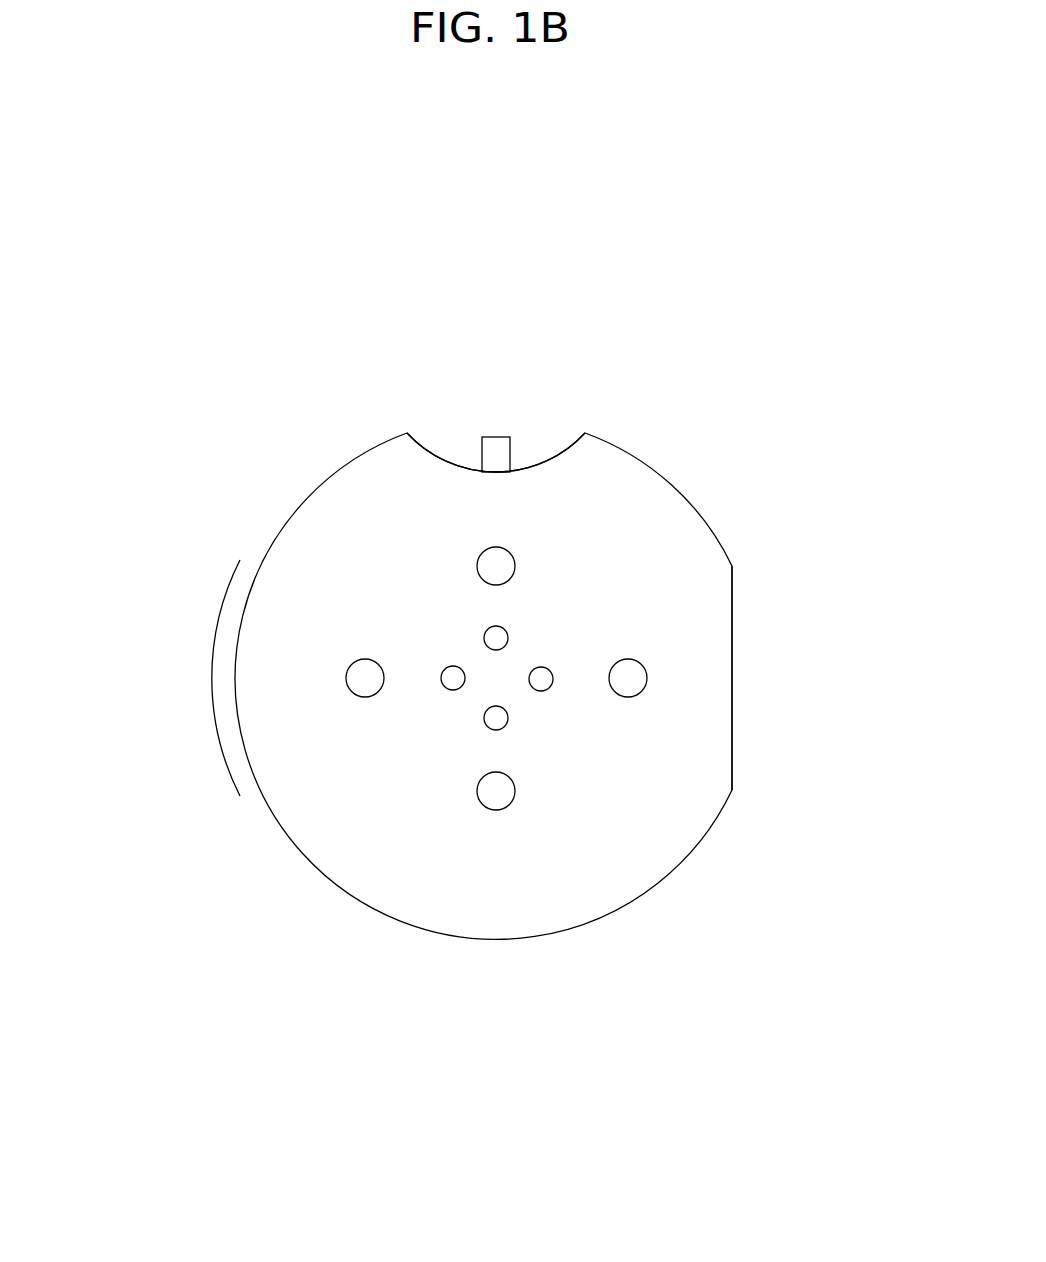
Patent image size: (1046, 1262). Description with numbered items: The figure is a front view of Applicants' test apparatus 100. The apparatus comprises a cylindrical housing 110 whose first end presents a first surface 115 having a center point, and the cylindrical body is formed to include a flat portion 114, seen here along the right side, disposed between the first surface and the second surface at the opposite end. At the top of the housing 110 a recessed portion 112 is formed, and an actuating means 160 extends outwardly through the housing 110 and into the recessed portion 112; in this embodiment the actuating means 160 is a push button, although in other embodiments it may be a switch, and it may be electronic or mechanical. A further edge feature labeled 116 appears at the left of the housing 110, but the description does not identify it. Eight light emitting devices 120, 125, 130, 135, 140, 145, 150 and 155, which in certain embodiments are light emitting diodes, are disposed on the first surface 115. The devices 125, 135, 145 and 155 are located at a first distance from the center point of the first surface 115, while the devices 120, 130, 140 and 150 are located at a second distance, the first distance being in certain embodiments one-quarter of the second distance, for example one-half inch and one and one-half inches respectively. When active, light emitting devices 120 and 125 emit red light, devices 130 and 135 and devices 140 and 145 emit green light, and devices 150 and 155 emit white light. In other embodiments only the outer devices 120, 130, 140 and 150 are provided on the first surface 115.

The test apparatus 100 is at (499, 698).
The cylindrical housing 110 is at (678, 490).
The recessed portion 112 is at (442, 459).
The flat portion 114 is at (733, 673).
The first surface 115 is at (514, 687).
The circumferential edge 116 is at (233, 678).
The light emitting device 120 is at (496, 566).
The light emitting device 125 is at (496, 638).
The light emitting device 130 is at (365, 678).
The light emitting device 135 is at (453, 678).
The light emitting device 140 is at (628, 678).
The light emitting device 145 is at (541, 679).
The light emitting device 150 is at (496, 791).
The light emitting device 155 is at (496, 718).
The actuating means 160 is at (497, 453).